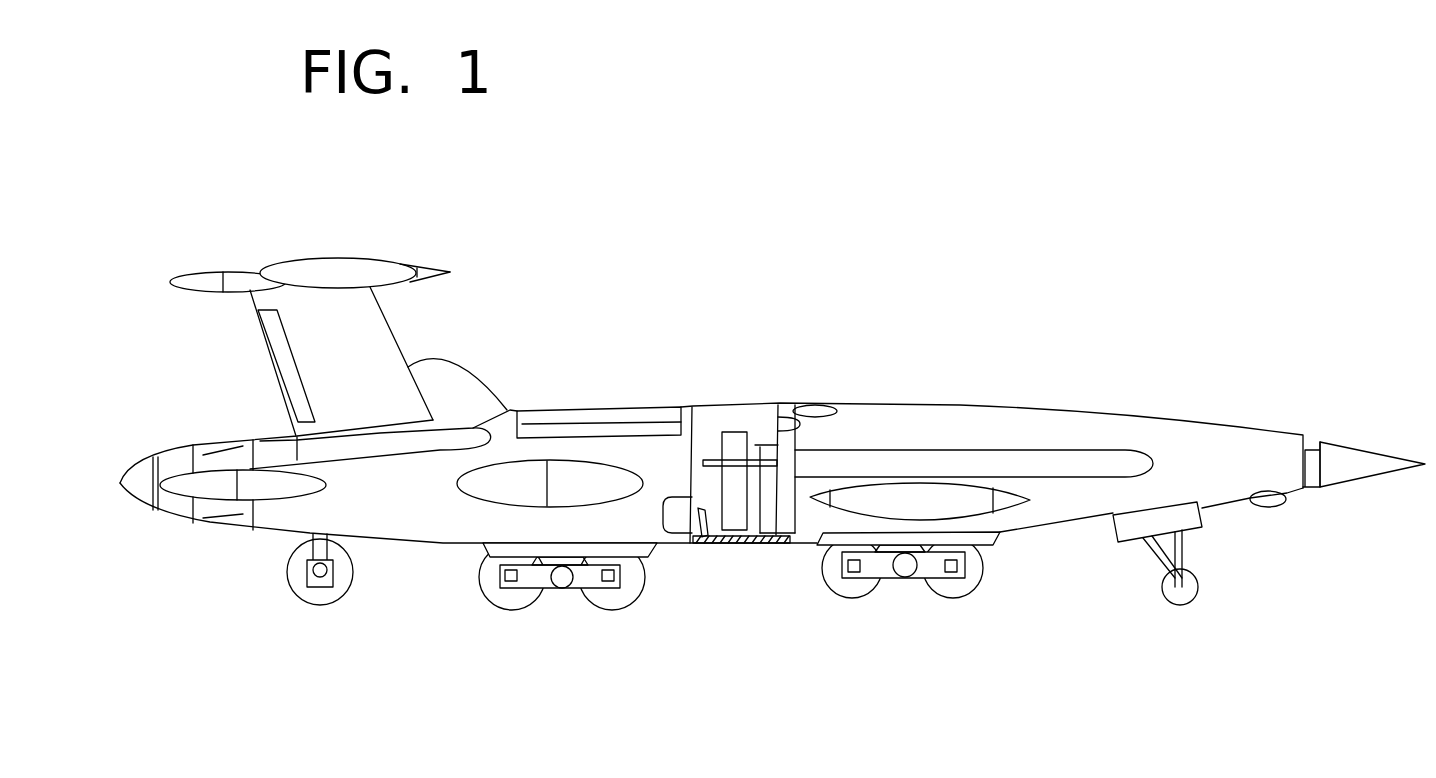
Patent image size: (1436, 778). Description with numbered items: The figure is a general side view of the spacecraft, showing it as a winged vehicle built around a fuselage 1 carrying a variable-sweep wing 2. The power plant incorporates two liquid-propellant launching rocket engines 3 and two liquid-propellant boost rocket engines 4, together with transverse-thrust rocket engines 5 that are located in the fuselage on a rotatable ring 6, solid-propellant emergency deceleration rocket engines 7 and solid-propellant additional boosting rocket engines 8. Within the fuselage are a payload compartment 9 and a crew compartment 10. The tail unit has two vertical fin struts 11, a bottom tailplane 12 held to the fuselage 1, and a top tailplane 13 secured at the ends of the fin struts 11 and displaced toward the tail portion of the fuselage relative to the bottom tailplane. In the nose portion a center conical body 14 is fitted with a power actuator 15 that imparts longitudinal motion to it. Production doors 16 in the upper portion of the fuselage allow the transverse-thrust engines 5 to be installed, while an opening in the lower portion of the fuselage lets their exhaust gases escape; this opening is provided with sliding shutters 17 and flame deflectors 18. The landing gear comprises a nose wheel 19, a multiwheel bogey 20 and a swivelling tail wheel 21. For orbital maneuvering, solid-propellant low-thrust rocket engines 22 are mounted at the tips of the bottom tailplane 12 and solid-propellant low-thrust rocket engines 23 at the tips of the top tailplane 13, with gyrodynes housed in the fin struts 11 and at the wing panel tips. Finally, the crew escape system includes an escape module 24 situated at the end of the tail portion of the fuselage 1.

The fuselage 1 is at (1200, 437).
The variable-sweep wing 2 is at (1097, 433).
The liquid-propellant launching rocket engines 3 is at (980, 500).
The liquid-propellant boost rocket engines 4 is at (807, 513).
The transverse-thrust rocket engines 5 is at (737, 435).
The rotatable ring 6 is at (713, 450).
The solid-propellant emergency deceleration rocket engines 7 is at (588, 475).
The solid-propellant additional boosting rocket engines 8 is at (503, 483).
The payload compartment 9 is at (550, 418).
The crew compartment 10 is at (470, 400).
The vertical fin struts 11 is at (367, 316).
The bottom tailplane 12 is at (383, 453).
The top tailplane 13 is at (300, 268).
The center conical body 14 is at (1368, 470).
The power actuator 15 is at (1313, 475).
The production doors 16 is at (793, 410).
The sliding shutters 17 is at (750, 547).
The flame deflectors 18 is at (707, 547).
The nose wheel 19 is at (1182, 607).
The multiwheel bogey 20 is at (513, 607).
The swivelling tail wheel 21 is at (323, 593).
The solid-propellant low-thrust rocket engines 22 is at (287, 487).
The solid-propellant low-thrust rocket engines 23 is at (193, 483).
The escape module 24 is at (177, 508).